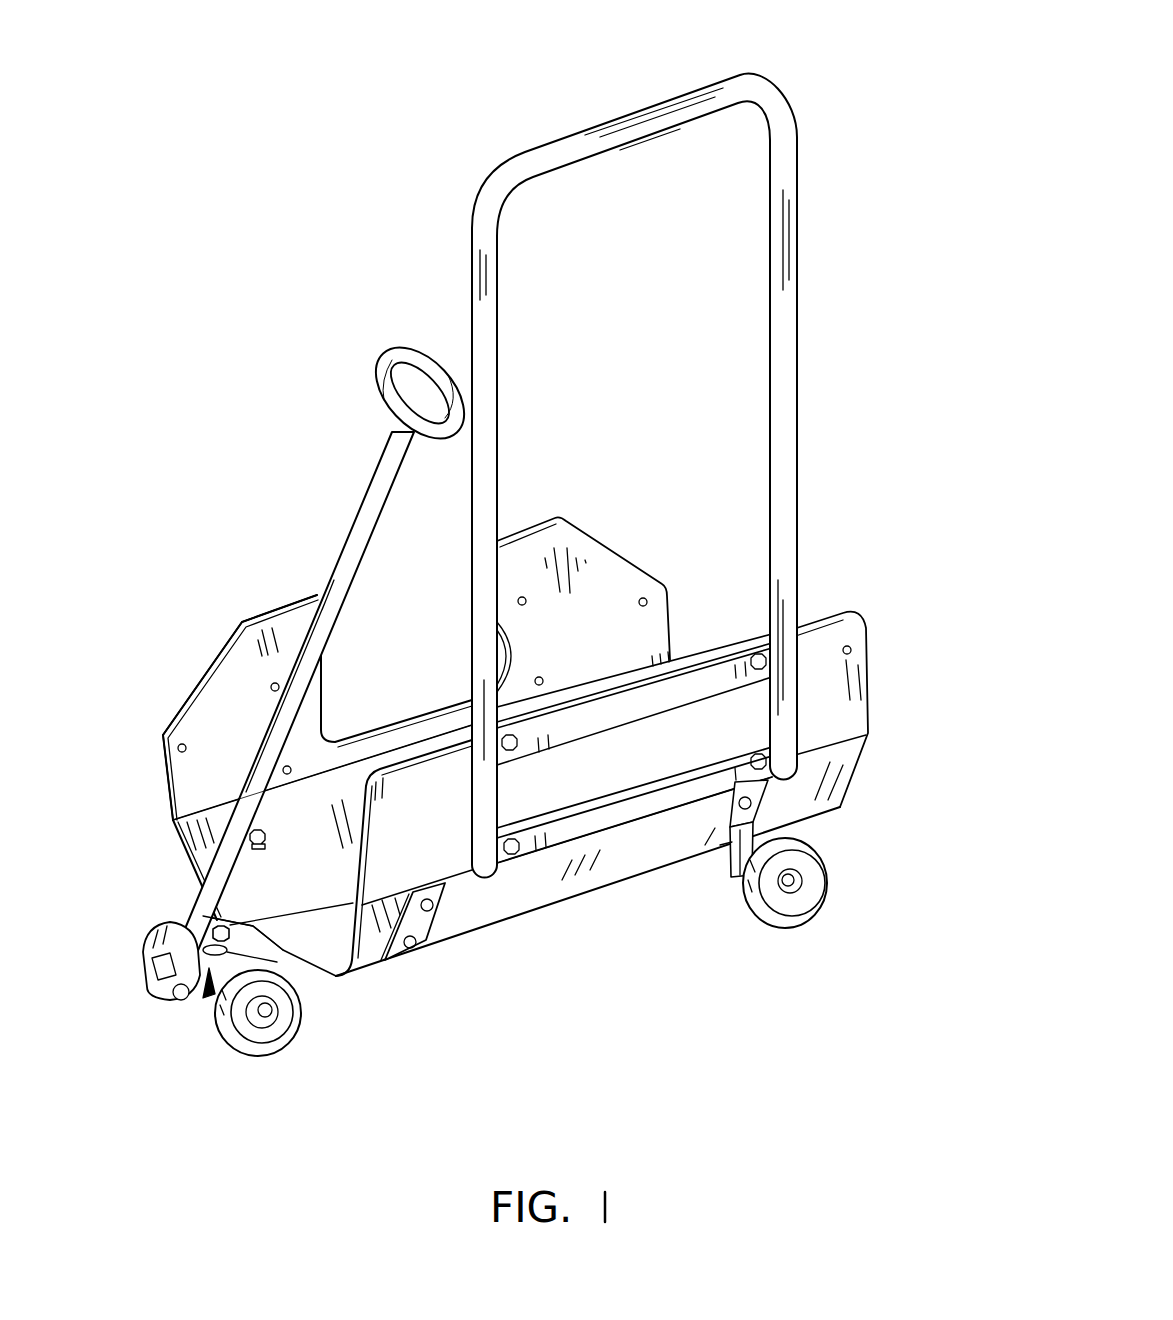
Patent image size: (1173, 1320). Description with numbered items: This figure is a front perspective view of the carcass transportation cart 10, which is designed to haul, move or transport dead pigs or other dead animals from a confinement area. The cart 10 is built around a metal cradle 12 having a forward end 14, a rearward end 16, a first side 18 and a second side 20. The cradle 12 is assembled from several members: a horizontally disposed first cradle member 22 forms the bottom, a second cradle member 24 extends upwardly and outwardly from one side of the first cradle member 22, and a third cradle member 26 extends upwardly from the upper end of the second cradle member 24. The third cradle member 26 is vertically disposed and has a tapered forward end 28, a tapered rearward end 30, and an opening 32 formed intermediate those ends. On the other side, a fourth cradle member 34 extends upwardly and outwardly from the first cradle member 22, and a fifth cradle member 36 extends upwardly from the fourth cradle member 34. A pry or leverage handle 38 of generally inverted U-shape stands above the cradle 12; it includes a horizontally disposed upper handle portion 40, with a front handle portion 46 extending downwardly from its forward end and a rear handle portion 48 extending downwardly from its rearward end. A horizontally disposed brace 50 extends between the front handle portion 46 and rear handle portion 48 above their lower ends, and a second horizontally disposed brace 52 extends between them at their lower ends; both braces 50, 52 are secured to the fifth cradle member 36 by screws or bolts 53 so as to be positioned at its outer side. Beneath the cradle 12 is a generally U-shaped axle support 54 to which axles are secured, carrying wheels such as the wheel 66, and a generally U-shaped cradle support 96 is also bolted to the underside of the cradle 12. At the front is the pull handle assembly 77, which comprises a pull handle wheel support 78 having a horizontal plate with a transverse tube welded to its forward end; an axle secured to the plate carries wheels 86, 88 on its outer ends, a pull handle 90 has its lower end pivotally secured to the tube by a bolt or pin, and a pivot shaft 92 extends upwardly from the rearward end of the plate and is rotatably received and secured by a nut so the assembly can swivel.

The carcass transportation cart 10 is at (850, 408).
The cradle 12 is at (160, 832).
The forward end 14 is at (194, 1006).
The rearward end 16 is at (888, 688).
The first side 18 is at (625, 942).
The second side 20 is at (208, 622).
The first cradle member 22 is at (335, 942).
The second cradle member 24 is at (197, 862).
The third cradle member 26 is at (222, 752).
The tapered forward end 28 is at (205, 668).
The tapered rearward end 30 is at (583, 530).
The opening 32 is at (408, 652).
The fourth cradle member 34 is at (490, 897).
The fifth cradle member 36 is at (415, 843).
The leverage handle 38 is at (679, 438).
The upper handle portion 40 is at (598, 145).
The front handle portion 46 is at (488, 347).
The rear handle portion 48 is at (785, 297).
The brace 50 is at (693, 667).
The brace 52 is at (626, 806).
The bolts 53 is at (750, 655).
The axle support 54 is at (710, 832).
The wheel 66 is at (805, 870).
The pull handle assembly 77 is at (360, 446).
The pull handle wheel support 78 is at (214, 992).
The wheel 86 is at (173, 915).
The wheel 88 is at (285, 1028).
The pull handle 90 is at (365, 510).
The pivot shaft 92 is at (264, 916).
The cradle support 96 is at (425, 928).